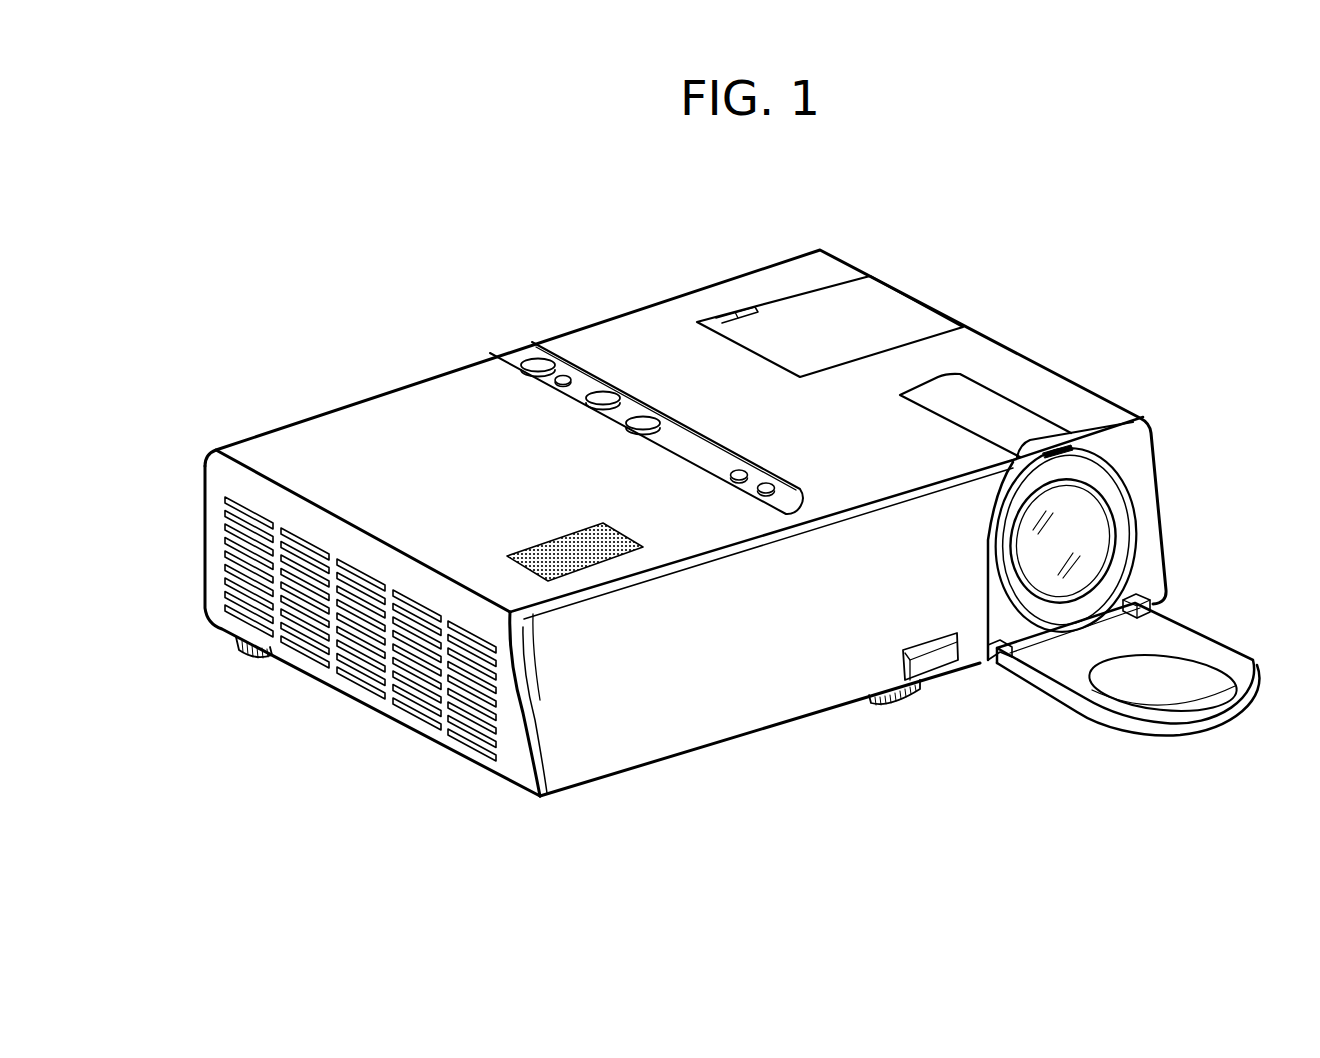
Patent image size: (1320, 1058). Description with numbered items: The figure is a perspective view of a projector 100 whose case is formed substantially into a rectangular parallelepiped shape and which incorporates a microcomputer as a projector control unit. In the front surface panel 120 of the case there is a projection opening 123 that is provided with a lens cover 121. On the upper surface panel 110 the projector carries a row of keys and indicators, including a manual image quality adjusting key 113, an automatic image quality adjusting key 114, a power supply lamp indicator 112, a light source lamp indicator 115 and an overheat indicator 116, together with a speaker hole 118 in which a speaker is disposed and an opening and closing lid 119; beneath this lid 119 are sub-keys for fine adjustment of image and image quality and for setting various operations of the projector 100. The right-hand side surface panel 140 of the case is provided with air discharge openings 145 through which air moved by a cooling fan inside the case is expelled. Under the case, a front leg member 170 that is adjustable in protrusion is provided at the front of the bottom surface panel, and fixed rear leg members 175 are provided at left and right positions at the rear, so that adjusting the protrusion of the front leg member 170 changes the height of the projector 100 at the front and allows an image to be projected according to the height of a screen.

The projector 100 is at (845, 214).
The upper surface panel 110 is at (530, 355).
The power supply lamp indicator 112 is at (566, 374).
The manual image quality adjusting key 113 is at (612, 390).
The automatic image quality adjusting key 114 is at (655, 418).
The light source lamp indicator 115 is at (739, 469).
The overheat indicator 116 is at (768, 481).
The speaker hole 118 is at (568, 534).
The opening and closing lid 119 is at (904, 303).
The front surface panel 120 is at (733, 722).
The lens cover 121 is at (1079, 716).
The projection opening 123 is at (1107, 520).
The right-hand side surface panel 140 is at (505, 762).
The air discharge openings 145 is at (302, 598).
The front leg member 170 is at (905, 703).
The rear leg members 175 is at (237, 652).